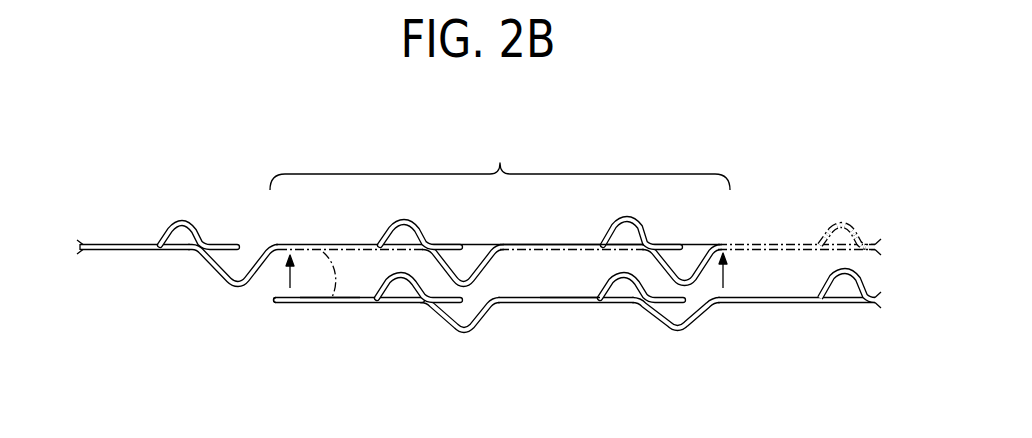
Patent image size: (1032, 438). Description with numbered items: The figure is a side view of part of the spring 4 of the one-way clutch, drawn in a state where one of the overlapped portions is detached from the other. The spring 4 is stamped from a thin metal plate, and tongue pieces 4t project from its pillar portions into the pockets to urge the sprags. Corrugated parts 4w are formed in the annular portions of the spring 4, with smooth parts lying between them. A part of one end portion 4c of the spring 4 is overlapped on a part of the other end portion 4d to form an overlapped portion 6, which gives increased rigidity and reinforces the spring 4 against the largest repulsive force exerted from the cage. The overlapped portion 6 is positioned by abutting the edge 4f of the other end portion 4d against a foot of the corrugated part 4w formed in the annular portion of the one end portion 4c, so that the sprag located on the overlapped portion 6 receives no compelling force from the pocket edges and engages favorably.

The spring 4 is at (131, 245).
The tongue piece 4t is at (231, 245).
The corrugated part 4w is at (472, 252).
The one end portion 4c is at (557, 243).
The other end portion 4d is at (328, 303).
The edge 4f is at (275, 305).
The overlapped portion 6 is at (500, 162).